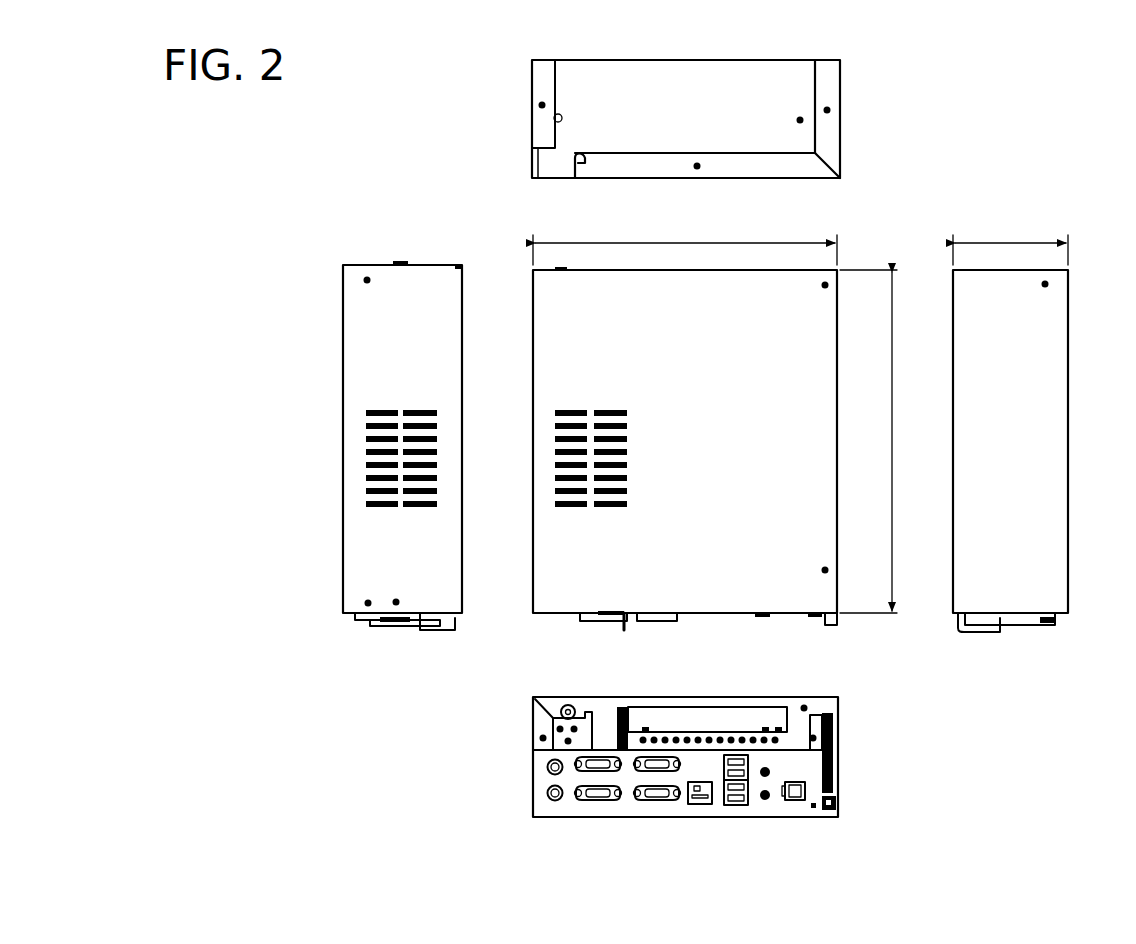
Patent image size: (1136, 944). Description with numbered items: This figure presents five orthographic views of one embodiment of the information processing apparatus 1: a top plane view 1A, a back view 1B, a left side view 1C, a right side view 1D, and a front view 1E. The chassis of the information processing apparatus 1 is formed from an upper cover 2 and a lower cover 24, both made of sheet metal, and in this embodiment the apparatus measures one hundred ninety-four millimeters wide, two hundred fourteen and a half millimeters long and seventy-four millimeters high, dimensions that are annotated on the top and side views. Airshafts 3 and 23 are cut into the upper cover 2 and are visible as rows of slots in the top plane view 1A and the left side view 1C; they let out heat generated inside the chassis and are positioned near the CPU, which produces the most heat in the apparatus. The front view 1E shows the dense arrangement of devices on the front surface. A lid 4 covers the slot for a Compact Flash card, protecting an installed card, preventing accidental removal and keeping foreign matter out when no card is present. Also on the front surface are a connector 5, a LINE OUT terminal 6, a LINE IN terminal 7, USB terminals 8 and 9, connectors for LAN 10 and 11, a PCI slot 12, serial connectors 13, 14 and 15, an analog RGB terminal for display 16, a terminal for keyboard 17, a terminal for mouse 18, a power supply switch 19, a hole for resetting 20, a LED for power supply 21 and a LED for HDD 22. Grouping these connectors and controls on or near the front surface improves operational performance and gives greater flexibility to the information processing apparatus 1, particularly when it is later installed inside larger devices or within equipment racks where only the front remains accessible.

The information processing apparatus 1 is at (1011, 140).
The top plane view 1A is at (524, 250).
The back view 1B is at (516, 97).
The left side view 1C is at (370, 254).
The right side view 1D is at (940, 260).
The front view 1E is at (484, 720).
The upper cover 2 is at (830, 140).
The airshaft 3 is at (610, 397).
The lid 4 is at (830, 745).
The connector 5 is at (795, 803).
The LINE OUT terminal 6 is at (765, 802).
The LINE IN terminal 7 is at (770, 772).
The USB terminal 8 is at (736, 806).
The USB terminal 9 is at (724, 758).
The connector for LAN 10 is at (757, 754).
The connector for LAN 11 is at (700, 806).
The PCI slot 12 is at (692, 711).
The serial connector 13 is at (655, 735).
The serial connector 14 is at (575, 772).
The serial connector 15 is at (657, 805).
The analog RGB terminal for display 16 is at (600, 805).
The terminal for keyboard 17 is at (547, 796).
The terminal for mouse 18 is at (547, 770).
The power supply switch 19 is at (568, 704).
The hole for resetting 20 is at (542, 742).
The LED for power supply 21 is at (551, 725).
The LED for HDD 22 is at (585, 714).
The airshaft 23 is at (418, 397).
The lower cover 24 is at (805, 88).